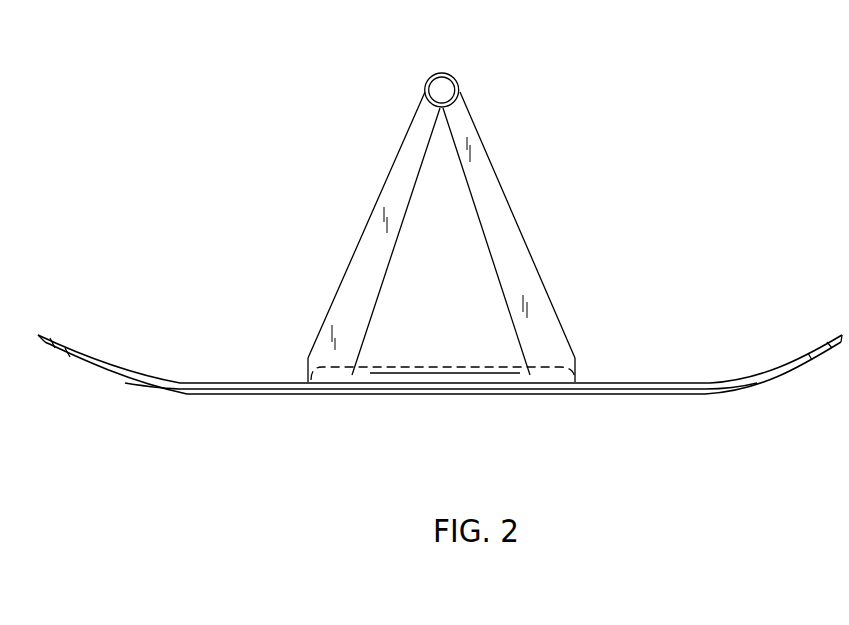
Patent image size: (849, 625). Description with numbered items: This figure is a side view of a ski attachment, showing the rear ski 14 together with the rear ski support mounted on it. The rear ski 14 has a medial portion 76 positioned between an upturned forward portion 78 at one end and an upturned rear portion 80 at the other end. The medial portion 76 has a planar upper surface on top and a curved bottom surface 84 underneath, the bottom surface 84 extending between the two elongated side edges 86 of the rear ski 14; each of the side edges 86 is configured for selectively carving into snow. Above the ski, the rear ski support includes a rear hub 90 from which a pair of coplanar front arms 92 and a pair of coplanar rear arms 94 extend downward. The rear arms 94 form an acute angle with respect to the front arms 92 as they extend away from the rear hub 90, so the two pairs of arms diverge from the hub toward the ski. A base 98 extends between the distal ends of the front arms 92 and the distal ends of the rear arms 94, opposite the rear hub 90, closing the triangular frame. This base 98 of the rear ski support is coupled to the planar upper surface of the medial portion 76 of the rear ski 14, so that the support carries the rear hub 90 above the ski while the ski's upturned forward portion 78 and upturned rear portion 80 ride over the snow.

The rear ski 14 is at (678, 383).
The medial portion 76 is at (598, 364).
The upturned forward portion 78 is at (841, 335).
The upturned rear portion 80 is at (40, 334).
The curved bottom surface 84 is at (663, 395).
The side edges 86 is at (253, 395).
The rear hub 90 is at (442, 72).
The front arms 92 is at (503, 199).
The rear arms 94 is at (380, 196).
The base 98 is at (438, 372).